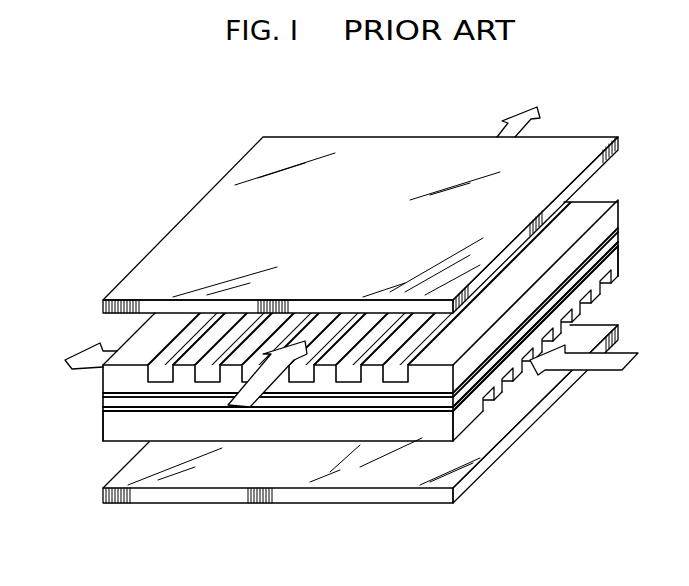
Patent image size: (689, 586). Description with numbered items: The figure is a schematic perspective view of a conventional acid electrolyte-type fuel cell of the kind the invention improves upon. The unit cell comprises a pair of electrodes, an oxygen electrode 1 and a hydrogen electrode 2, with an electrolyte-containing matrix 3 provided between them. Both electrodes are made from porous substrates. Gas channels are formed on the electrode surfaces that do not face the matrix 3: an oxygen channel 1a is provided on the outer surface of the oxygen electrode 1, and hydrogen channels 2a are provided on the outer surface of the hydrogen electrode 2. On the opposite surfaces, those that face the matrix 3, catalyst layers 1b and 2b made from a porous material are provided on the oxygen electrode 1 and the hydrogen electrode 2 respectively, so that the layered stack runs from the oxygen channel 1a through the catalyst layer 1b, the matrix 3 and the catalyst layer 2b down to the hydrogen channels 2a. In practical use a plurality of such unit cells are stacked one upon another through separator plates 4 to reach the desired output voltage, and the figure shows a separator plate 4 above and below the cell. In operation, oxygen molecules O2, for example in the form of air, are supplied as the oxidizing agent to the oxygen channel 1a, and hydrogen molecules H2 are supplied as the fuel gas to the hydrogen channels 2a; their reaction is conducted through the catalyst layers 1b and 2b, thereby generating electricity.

The oxygen electrode 1 is at (102, 378).
The oxygen channel 1a is at (398, 380).
The catalyst layer 1b is at (102, 395).
The hydrogen electrode 2 is at (112, 442).
The hydrogen channel 2a is at (483, 404).
The catalyst layer 2b is at (102, 409).
The electrolyte-containing matrix 3 is at (102, 402).
The separator plate 4 is at (170, 233).
The oxygen molecules O2 is at (240, 408).
The hydrogen molecules H2 is at (607, 372).